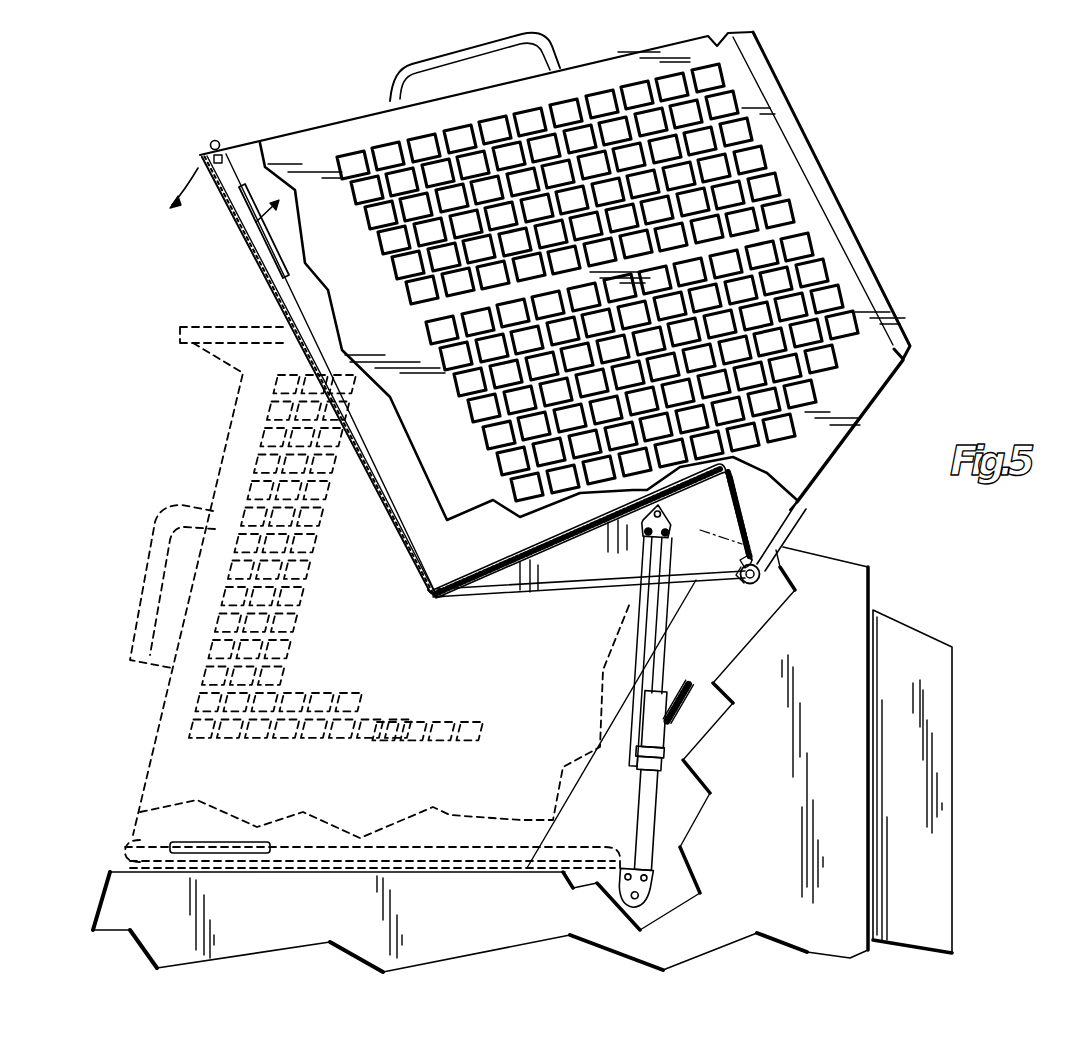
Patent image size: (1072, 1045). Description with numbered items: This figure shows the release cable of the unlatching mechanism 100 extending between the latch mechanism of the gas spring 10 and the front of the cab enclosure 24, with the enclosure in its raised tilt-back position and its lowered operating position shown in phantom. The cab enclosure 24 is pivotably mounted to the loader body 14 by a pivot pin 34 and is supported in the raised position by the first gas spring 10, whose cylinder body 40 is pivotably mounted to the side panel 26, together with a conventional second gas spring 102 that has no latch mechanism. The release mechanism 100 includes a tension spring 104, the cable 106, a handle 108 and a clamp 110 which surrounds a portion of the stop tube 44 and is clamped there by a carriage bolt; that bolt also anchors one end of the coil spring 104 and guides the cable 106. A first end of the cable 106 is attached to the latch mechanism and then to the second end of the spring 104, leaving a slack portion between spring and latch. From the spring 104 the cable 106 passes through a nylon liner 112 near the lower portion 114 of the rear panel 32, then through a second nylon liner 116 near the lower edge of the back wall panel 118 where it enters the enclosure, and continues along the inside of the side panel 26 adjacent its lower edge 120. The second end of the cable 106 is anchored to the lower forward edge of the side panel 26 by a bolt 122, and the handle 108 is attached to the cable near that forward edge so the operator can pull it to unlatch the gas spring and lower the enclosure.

The gas spring 10 is at (653, 823).
The body 14 is at (667, 890).
The cab enclosure 24 is at (810, 218).
The side panel 26 is at (912, 316).
The rear panel 32 is at (806, 505).
The pivot pin 34 is at (786, 542).
The cylinder body 40 is at (678, 552).
The stop tube 44 is at (652, 793).
The unlatching mechanism 100 is at (689, 700).
The second gas spring 102 is at (634, 664).
The tension spring 104 is at (677, 687).
The cable 106 is at (292, 290).
The handle 108 is at (255, 228).
The clamp 110 is at (628, 767).
The nylon liner 112 is at (742, 541).
The lower portion 114 is at (806, 502).
The nylon liner 116 is at (438, 602).
The back wall panel 118 is at (545, 543).
The lower edge 120 is at (383, 518).
The bolt 122 is at (216, 140).